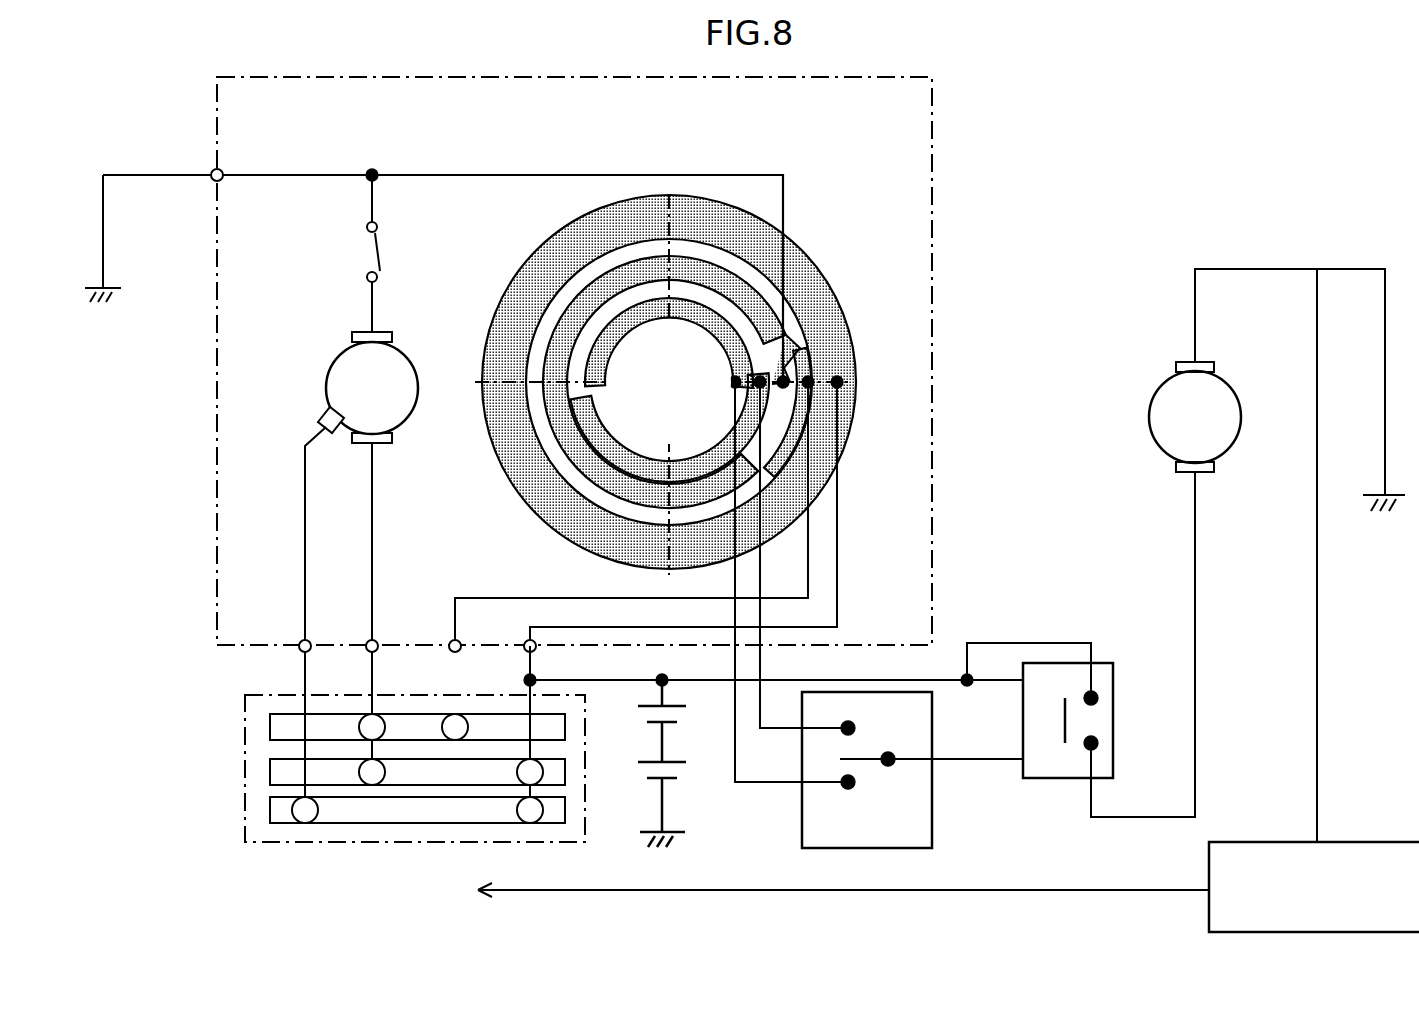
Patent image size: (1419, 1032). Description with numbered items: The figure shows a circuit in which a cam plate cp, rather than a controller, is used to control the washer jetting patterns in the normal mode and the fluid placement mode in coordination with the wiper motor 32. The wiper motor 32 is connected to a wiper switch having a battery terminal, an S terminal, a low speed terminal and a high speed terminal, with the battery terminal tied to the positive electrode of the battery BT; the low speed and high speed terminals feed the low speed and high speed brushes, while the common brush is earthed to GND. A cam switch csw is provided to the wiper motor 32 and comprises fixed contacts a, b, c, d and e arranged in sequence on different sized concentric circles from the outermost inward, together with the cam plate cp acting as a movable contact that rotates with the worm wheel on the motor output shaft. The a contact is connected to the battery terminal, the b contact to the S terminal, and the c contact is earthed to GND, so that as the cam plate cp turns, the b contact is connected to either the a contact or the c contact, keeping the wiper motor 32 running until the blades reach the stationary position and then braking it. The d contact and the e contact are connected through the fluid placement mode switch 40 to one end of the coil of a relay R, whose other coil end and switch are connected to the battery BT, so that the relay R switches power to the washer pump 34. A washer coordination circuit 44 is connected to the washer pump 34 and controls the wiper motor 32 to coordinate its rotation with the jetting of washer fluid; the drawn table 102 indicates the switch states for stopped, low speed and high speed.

The wiper motor 32 is at (336, 356).
The washer pump 34 is at (1158, 390).
The fluid placement mode switch 40 is at (935, 810).
The washer coordination circuit 44 is at (1368, 842).
The switch contact table 102 is at (330, 848).
The ground GND is at (434, 260).
The cam switch csw is at (652, 488).
The cam plate cp is at (528, 292).
The a contact a is at (840, 376).
The b contact b is at (812, 376).
The c contact c is at (796, 332).
The d contact d is at (755, 392).
The e contact e is at (733, 380).
The S terminal S is at (443, 629).
The battery BT is at (687, 788).
The relay R is at (1105, 677).